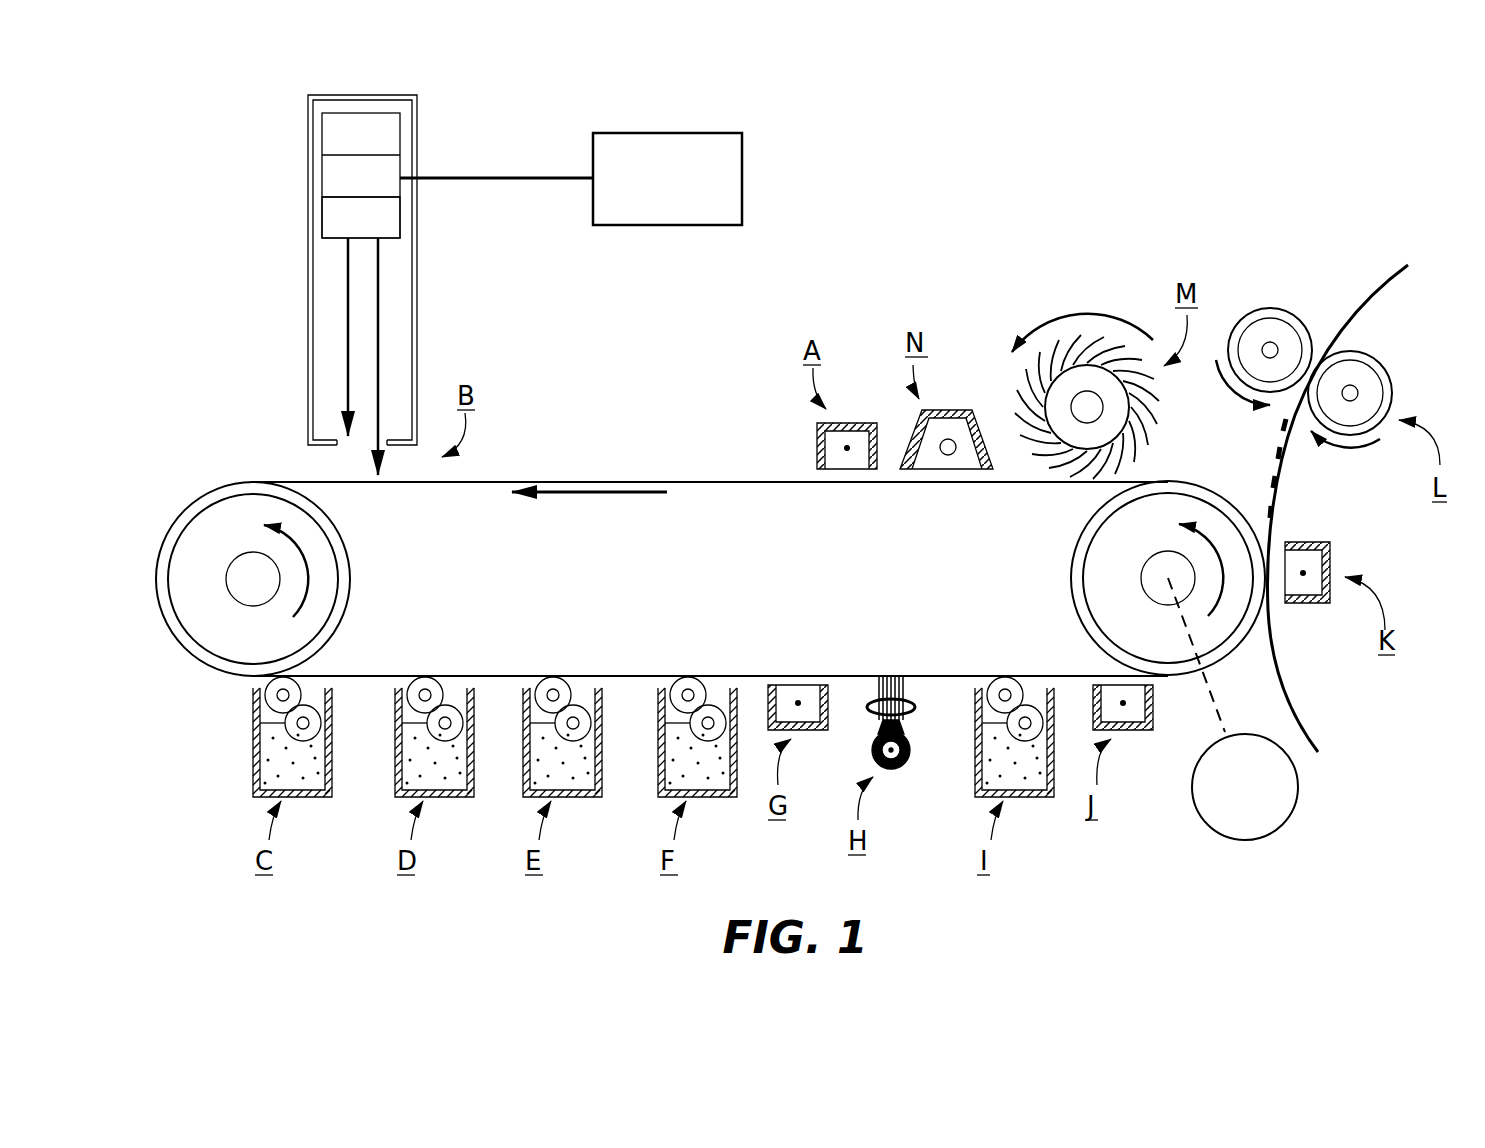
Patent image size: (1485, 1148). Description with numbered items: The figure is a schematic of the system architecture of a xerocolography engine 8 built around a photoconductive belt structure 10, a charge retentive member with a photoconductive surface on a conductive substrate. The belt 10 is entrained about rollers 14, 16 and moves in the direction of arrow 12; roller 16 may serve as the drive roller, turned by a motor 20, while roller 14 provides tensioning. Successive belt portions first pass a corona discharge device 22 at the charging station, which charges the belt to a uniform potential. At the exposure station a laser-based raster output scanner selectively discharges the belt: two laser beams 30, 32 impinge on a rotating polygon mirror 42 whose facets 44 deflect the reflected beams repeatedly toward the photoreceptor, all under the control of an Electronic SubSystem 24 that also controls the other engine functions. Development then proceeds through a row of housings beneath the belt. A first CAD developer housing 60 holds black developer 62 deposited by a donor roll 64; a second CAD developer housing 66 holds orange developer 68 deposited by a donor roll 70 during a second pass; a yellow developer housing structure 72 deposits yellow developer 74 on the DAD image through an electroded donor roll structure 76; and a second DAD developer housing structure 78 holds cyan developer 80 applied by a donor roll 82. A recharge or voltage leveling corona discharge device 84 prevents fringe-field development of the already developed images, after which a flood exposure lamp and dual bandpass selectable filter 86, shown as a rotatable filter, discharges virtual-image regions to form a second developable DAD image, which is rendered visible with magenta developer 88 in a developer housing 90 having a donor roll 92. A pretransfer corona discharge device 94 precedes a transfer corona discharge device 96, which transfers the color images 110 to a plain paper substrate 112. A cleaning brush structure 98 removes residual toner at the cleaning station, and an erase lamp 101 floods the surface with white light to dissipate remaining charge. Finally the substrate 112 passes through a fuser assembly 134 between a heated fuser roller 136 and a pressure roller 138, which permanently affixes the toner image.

The xerocolography engine 8 is at (198, 226).
The photoconductive belt structure 10 is at (608, 480).
The arrow 12 is at (585, 494).
The roller 14 is at (353, 577).
The roller 16 is at (1072, 570).
The motor 20 is at (1247, 840).
The corona discharge device 22 is at (847, 448).
The Electronic SubSystem (ESS) 24 is at (742, 178).
The laser beam 30 is at (380, 345).
The laser beam 32 is at (347, 345).
The rotating polygon mirror 42 is at (320, 196).
The facets 44 is at (388, 225).
The first CAD developer housing 60 is at (253, 782).
The black developer 62 is at (288, 767).
The donor roll 64 is at (272, 700).
The second CAD developer housing 66 is at (419, 769).
The developer 68 is at (440, 799).
The donor roll 70 is at (406, 709).
The yellow developer housing structure 72 is at (547, 769).
The developer 74 is at (568, 799).
The electroded donor roll structure 76 is at (534, 709).
The second DAD developer housing structure 78 is at (682, 769).
The cyan developer 80 is at (703, 799).
The donor roll 82 is at (669, 709).
The recharge or voltage leveling corona discharge device 84 is at (818, 732).
The flood exposure lamp and dual bandpass selectable filter 86 is at (899, 777).
The magenta developer 88 is at (1020, 799).
The developer housing 90 is at (999, 769).
The donor roll 92 is at (986, 709).
The pretransfer corona discharge device 94 is at (1140, 732).
The transfer corona discharge device 96 is at (1310, 605).
The cleaning brush structure 98 is at (1078, 402).
The erase lamp 101 is at (940, 447).
The color images 110 is at (1268, 470).
The plain paper substrate 112 is at (1307, 718).
The fuser assembly 134 is at (1359, 326).
The heated fuser roller 136 is at (1270, 308).
The pressure roller 138 is at (1377, 353).